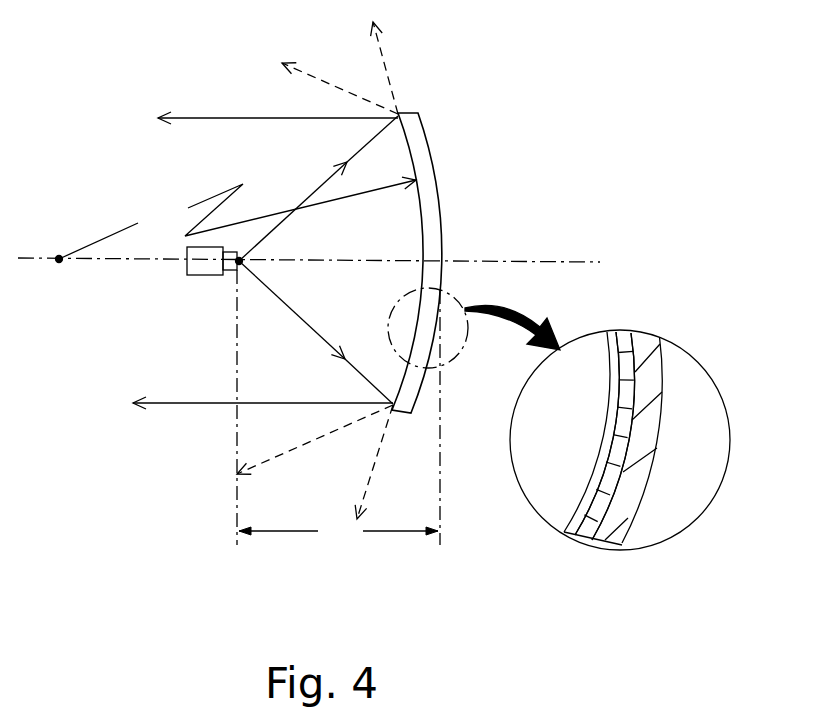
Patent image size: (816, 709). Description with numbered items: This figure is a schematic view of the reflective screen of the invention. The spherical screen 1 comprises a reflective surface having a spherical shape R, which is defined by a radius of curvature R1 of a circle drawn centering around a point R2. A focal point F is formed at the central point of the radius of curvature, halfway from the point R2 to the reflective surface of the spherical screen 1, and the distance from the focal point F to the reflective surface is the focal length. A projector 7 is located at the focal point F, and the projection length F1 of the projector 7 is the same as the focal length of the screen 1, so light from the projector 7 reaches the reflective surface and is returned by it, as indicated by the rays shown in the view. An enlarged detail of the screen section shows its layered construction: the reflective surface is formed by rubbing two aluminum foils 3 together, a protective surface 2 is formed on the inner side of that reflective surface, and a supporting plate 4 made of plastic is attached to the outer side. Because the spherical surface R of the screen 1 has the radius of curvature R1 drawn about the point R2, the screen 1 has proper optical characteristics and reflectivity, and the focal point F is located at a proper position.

The spherical screen 1 is at (423, 143).
The protective surface 2 is at (565, 527).
The aluminum foils 3 is at (586, 532).
The supporting plate 4 is at (646, 481).
The projector 7 is at (199, 276).
The focal point F is at (255, 262).
The projection length F1 is at (338, 537).
The spherical shape R is at (438, 231).
The radius of curvature R1 is at (237, 219).
The center point R2 is at (63, 277).